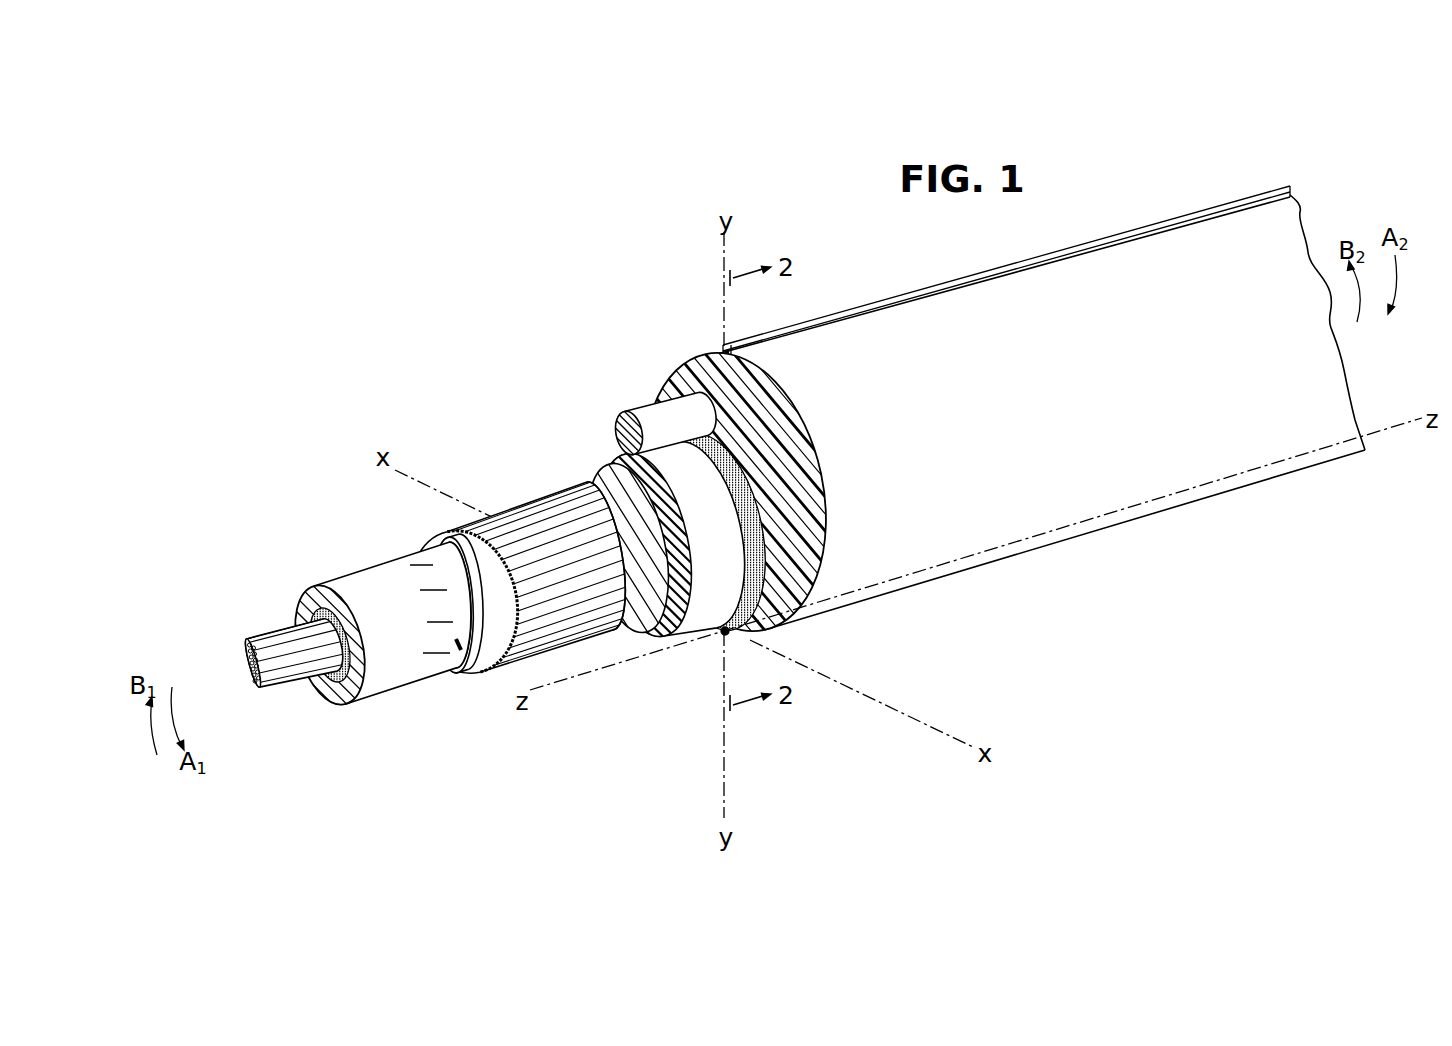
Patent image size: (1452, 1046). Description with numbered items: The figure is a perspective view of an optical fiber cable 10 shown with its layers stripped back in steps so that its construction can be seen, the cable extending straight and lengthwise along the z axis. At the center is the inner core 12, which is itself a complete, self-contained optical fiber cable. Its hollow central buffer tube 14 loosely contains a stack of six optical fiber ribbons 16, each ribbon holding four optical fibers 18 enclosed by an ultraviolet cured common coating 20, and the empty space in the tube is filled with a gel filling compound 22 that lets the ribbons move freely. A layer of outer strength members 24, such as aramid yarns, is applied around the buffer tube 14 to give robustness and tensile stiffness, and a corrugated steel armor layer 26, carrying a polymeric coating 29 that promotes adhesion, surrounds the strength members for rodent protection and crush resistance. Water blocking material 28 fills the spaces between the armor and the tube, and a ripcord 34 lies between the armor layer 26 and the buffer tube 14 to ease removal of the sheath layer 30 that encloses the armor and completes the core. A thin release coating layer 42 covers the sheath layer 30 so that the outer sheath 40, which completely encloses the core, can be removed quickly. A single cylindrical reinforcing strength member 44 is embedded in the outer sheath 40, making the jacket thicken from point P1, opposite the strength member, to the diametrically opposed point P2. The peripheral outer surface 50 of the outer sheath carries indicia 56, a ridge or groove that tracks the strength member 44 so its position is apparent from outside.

The optical fiber cable 10 is at (638, 336).
The inner core 12 is at (640, 642).
The buffer tube 14 is at (323, 598).
The optical fiber ribbons 16 is at (268, 686).
The optical fibers 18 is at (256, 683).
The common coating 20 is at (272, 640).
The gel filling compound 22 is at (345, 700).
The outer strength members 24 is at (437, 620).
The corrugated steel armor layer 26 is at (536, 512).
The water blocking material 28 is at (447, 550).
The polymeric coating 29 is at (591, 497).
The sheath layer 30 is at (700, 636).
The ripcord 34 is at (453, 668).
The outer sheath 40 is at (805, 477).
The release coating layer 42 is at (741, 500).
The reinforcing strength member 44 is at (655, 412).
The peripheral outer surface 50 is at (1157, 467).
The indicia 56 is at (1034, 250).
The point P1 is at (728, 636).
The point P2 is at (733, 348).